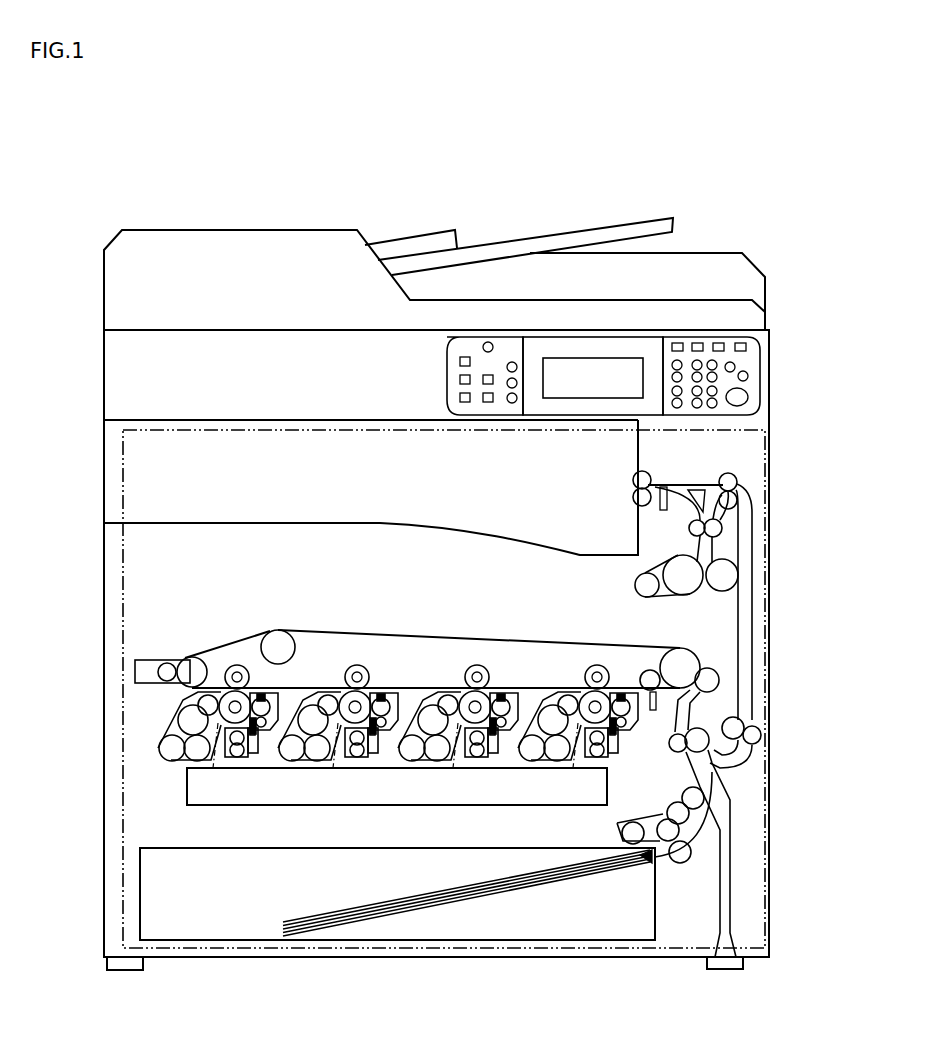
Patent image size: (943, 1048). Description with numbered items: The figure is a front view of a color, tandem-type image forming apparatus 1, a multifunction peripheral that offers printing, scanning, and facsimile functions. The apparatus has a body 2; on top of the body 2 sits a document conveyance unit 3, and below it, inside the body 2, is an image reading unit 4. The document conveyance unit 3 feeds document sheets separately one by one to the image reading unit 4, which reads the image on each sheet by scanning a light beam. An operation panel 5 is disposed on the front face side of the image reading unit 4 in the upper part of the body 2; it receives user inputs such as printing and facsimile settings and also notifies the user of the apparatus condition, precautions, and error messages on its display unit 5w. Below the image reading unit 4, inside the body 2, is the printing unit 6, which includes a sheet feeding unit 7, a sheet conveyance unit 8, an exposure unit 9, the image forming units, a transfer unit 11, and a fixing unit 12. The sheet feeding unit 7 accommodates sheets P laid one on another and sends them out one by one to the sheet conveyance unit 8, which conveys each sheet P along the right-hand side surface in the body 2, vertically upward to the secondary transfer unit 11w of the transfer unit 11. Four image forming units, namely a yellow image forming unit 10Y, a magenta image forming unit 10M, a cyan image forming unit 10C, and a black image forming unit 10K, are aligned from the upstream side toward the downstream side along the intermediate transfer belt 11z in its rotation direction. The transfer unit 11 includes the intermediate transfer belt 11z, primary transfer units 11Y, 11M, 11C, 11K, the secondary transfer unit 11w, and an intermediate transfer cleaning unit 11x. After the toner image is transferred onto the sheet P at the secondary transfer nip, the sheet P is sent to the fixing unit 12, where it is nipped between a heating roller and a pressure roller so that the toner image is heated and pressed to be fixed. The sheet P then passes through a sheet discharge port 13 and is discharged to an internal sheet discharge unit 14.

The image forming apparatus 1 is at (125, 140).
The body 2 is at (92, 478).
The document conveyance unit 3 is at (272, 222).
The image reading unit 4 is at (165, 388).
The operation panel 5 is at (728, 327).
The display unit 5w is at (620, 372).
The printing unit 6 is at (120, 582).
The sheet feeding unit 7 is at (600, 946).
The sheet conveyance unit 8 is at (723, 782).
The exposure unit 9 is at (190, 790).
The yellow image forming unit 10Y is at (222, 692).
The magenta image forming unit 10M is at (338, 692).
The cyan image forming unit 10C is at (456, 692).
The black image forming unit 10K is at (616, 690).
The transfer unit 11 is at (510, 628).
The intermediate transfer cleaning unit 11x is at (135, 666).
The primary transfer unit (yellow) 11Y is at (224, 668).
The primary transfer unit (magenta) 11M is at (344, 668).
The primary transfer unit (cyan) 11C is at (464, 668).
The primary transfer unit (black) 11K is at (584, 668).
The intermediate transfer belt 11z is at (545, 642).
The secondary transfer unit 11w is at (712, 663).
The fixing unit 12 is at (730, 548).
The sheet discharge port 13 is at (632, 486).
The internal sheet discharge unit 14 is at (536, 542).
The sheet P is at (490, 905).